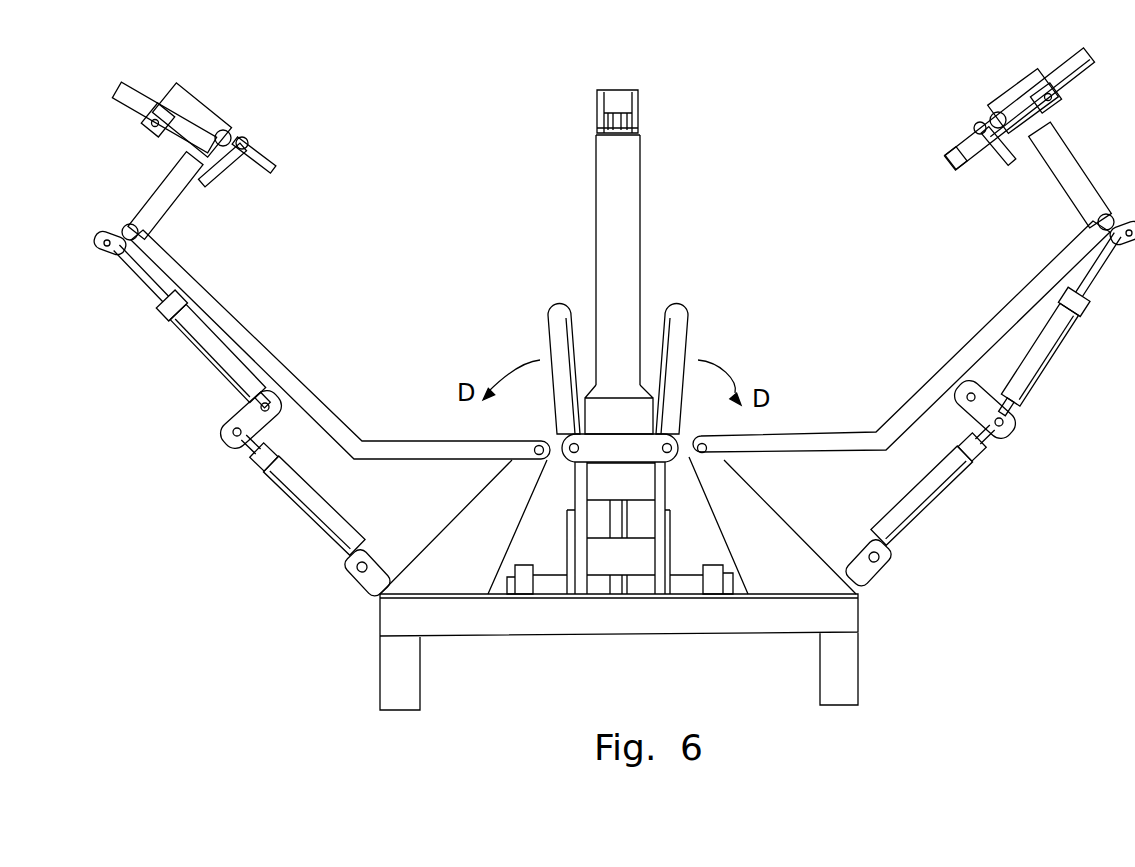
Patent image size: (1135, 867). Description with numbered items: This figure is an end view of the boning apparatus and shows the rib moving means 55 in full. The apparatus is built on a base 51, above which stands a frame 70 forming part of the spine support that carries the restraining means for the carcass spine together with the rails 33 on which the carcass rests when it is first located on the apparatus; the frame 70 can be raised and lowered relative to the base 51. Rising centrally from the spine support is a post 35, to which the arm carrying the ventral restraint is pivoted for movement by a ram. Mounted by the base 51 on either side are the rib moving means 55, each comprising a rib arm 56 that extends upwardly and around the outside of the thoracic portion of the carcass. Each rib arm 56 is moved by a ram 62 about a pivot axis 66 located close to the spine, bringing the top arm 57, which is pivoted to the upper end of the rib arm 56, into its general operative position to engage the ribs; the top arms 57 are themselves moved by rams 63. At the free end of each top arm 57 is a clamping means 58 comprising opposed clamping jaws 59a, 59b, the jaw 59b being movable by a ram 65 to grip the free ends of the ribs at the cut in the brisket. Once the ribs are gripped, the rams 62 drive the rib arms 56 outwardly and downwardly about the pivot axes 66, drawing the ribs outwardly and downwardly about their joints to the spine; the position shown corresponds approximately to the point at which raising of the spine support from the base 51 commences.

The rails 33 is at (680, 312).
The post 35 is at (608, 255).
The base 51 is at (885, 641).
The rib moving means 55 is at (378, 216).
The rib arms 56 is at (263, 348).
The top arms 57 is at (168, 197).
The clamping means 58 is at (950, 123).
The clamping jaw 59a is at (955, 157).
The clamping jaw 59b is at (1007, 162).
The ram 62 is at (297, 502).
The ram 63 is at (225, 363).
The ram 65 is at (1068, 74).
The pivot axes 66 is at (712, 462).
The frame 70 is at (604, 419).